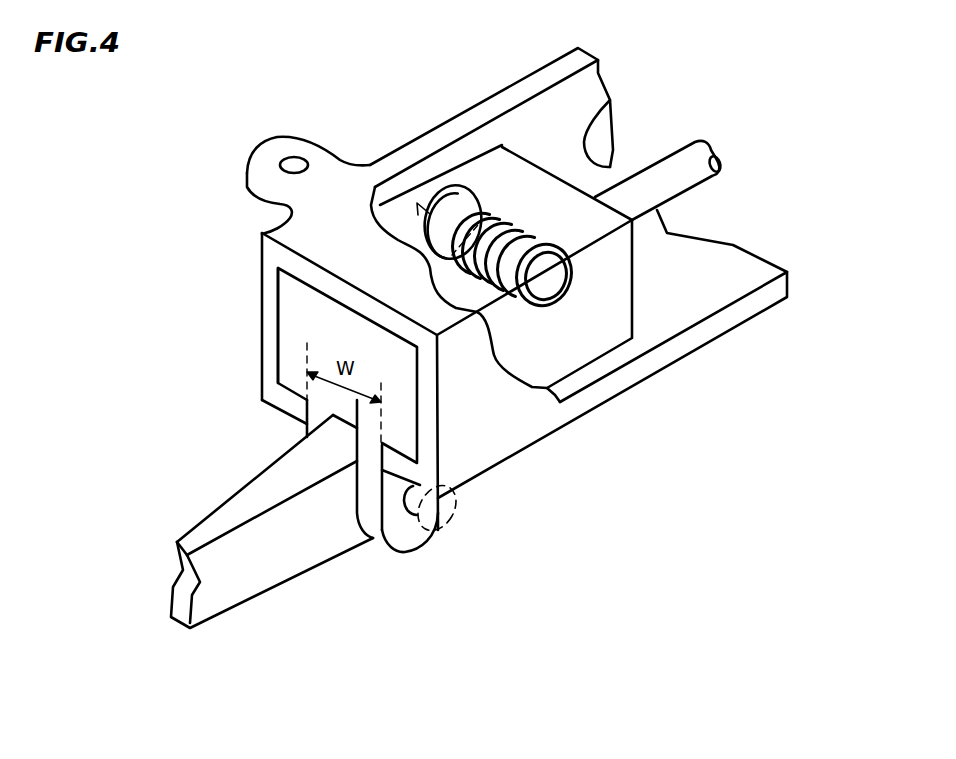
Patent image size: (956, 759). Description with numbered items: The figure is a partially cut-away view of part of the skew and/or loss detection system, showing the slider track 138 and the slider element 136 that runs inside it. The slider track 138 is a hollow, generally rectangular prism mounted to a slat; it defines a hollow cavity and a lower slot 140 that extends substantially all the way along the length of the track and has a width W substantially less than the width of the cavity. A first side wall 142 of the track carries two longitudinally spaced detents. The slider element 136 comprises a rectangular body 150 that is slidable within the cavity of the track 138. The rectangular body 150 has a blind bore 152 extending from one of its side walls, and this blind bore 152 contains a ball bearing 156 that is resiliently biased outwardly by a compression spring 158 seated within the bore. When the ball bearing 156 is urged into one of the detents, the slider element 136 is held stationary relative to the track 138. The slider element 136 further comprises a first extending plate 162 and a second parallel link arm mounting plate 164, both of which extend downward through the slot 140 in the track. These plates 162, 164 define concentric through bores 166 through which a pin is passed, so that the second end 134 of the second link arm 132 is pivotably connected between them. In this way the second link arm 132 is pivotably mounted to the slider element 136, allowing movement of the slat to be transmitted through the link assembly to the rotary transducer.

The second link arm 132 is at (223, 570).
The second end of the second link arm 134 is at (343, 510).
The slider element 136 is at (278, 360).
The slider track 138 is at (272, 255).
The lower slot 140 is at (300, 424).
The first side wall 142 is at (528, 425).
The rectangular body 150 is at (320, 316).
The blind bore 152 is at (452, 190).
The ball bearing 156 is at (467, 213).
The compression spring 158 is at (547, 241).
The first extending plate 162 is at (317, 442).
The second parallel link arm mounting plate 164 is at (447, 503).
The concentric through bores 166 is at (422, 505).